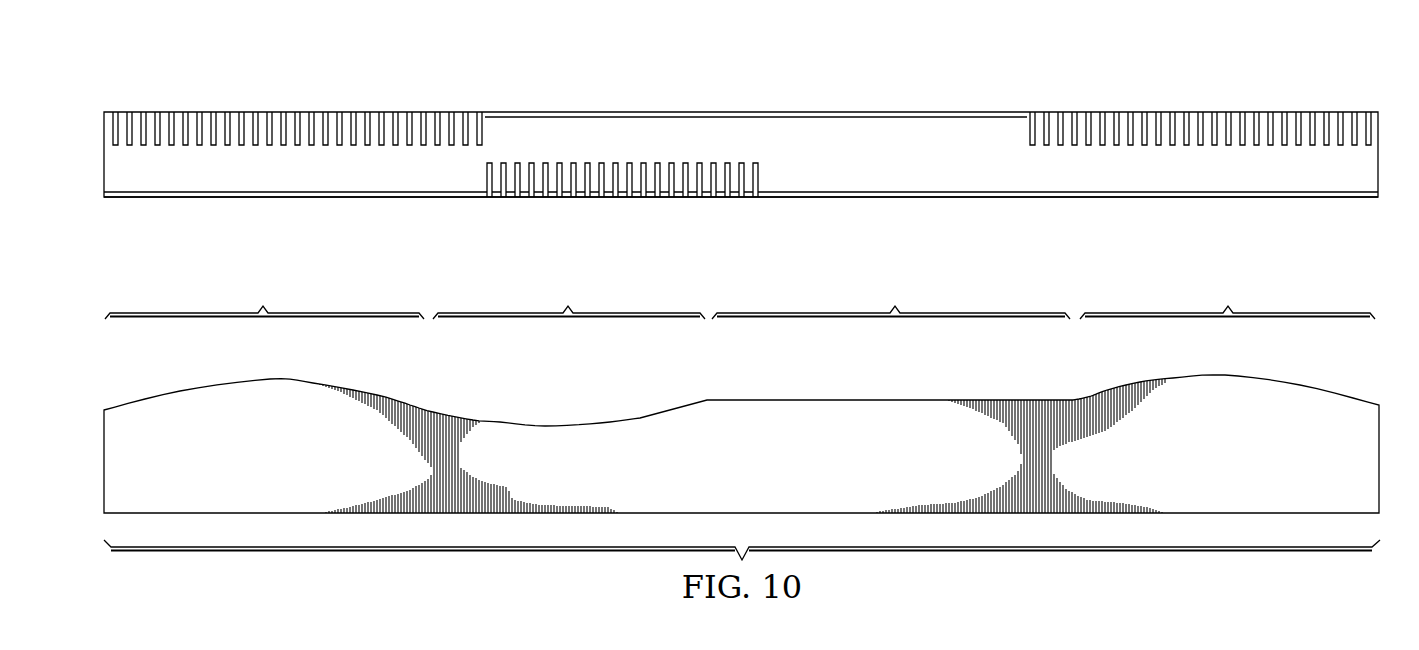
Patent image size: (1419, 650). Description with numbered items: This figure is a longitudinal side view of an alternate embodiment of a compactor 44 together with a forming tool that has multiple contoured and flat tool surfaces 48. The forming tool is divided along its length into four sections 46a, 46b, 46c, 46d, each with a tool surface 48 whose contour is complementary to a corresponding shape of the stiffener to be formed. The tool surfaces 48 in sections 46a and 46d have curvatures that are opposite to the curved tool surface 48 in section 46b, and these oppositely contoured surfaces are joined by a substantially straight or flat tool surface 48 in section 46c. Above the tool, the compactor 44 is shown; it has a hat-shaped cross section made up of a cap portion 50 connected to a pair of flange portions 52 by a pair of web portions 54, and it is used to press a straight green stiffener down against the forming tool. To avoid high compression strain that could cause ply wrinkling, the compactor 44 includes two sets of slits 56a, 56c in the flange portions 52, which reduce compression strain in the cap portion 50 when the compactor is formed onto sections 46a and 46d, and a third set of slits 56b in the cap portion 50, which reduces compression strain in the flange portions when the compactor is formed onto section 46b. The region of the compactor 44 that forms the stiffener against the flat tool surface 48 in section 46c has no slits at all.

The compactor 44 is at (889, 79).
The forming tool section 46a is at (264, 299).
The forming tool section 46b is at (569, 299).
The forming tool section 46c is at (891, 299).
The forming tool section 46d is at (1227, 299).
The tool surface 48 is at (235, 380).
The cap portion 50 is at (754, 116).
The flange portion 52 is at (1118, 183).
The web portion 54 is at (641, 111).
The set of slits 56a is at (285, 95).
The set of slits 56b is at (584, 198).
The set of slits 56c is at (1228, 95).